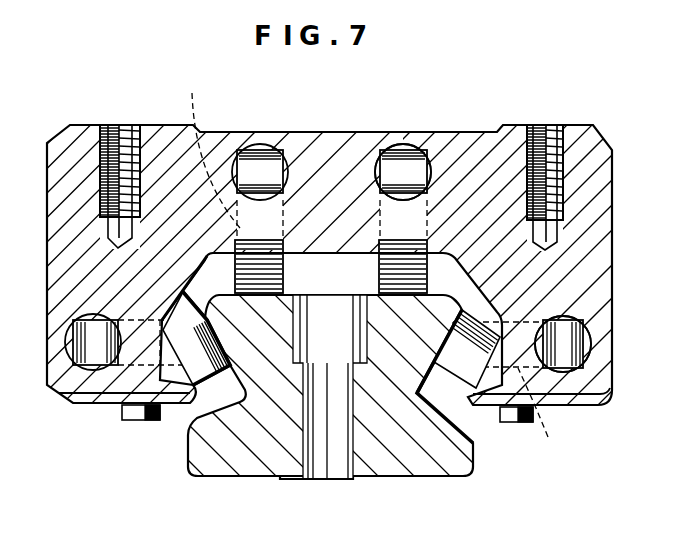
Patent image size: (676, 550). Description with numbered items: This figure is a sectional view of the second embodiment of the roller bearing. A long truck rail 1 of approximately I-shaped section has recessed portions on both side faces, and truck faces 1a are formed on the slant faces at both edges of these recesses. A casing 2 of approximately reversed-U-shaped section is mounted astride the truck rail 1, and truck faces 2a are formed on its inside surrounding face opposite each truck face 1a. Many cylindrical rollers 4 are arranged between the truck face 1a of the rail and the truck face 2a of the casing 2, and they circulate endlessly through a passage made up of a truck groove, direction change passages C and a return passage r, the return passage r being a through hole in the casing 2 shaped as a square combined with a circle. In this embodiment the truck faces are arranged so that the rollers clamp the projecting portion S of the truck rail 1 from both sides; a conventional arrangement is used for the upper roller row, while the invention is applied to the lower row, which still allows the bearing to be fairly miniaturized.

The truck rail 1 is at (420, 472).
The truck face 1a is at (388, 300).
The casing 2 is at (505, 140).
The truck face 2a is at (425, 215).
The cylindrical roller 4 is at (257, 145).
The direction change passage C is at (373, 262).
The return passage r is at (397, 148).
The projecting portion S is at (192, 303).